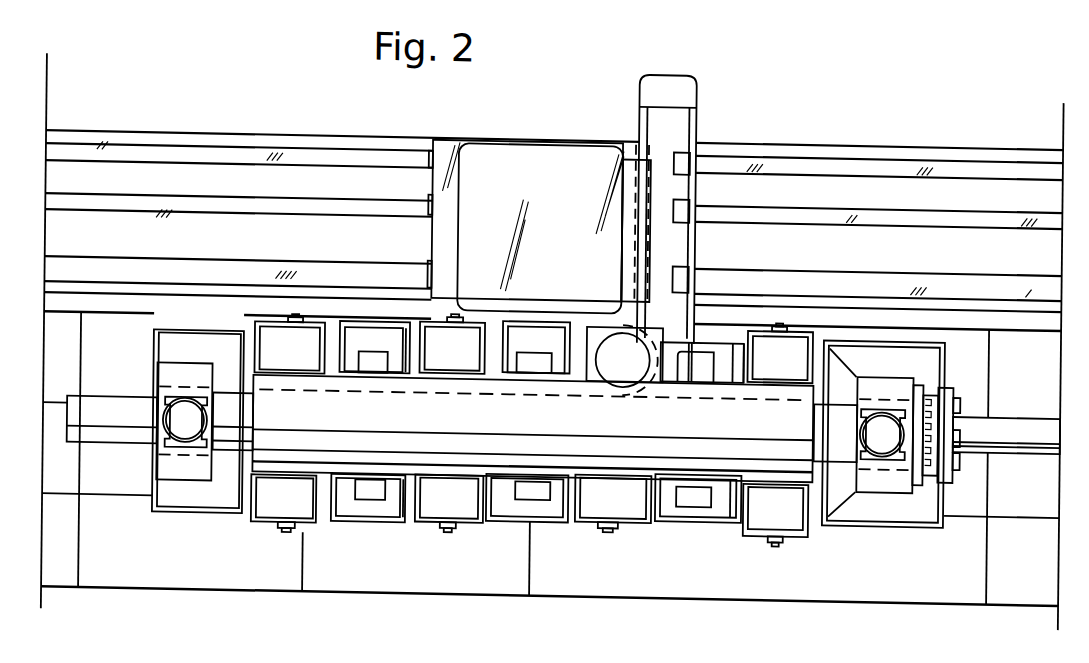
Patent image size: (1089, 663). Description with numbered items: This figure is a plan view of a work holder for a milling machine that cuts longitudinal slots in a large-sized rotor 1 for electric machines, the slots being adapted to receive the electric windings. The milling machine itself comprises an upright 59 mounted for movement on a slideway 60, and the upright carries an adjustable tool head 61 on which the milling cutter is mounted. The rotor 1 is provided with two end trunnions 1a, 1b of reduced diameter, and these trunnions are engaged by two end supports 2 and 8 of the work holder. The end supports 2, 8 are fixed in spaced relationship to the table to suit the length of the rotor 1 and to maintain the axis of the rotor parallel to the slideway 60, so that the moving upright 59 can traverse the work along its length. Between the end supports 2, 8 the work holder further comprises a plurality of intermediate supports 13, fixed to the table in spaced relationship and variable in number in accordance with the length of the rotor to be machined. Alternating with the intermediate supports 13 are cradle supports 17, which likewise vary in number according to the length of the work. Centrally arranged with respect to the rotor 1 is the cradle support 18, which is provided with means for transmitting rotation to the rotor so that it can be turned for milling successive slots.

The slideway 60 is at (280, 131).
The upright 59 is at (520, 150).
The adjustable tool head 61 is at (623, 382).
The rotor 1 is at (532, 428).
The end trunnion 1a is at (1012, 444).
The end trunnion 1b is at (113, 416).
The end support 8 is at (177, 497).
The end support 2 is at (884, 490).
The intermediate supports 13 is at (265, 536).
The cradle supports 17 is at (375, 534).
The cradle support provided with means for transmitting rotation 18 is at (545, 535).